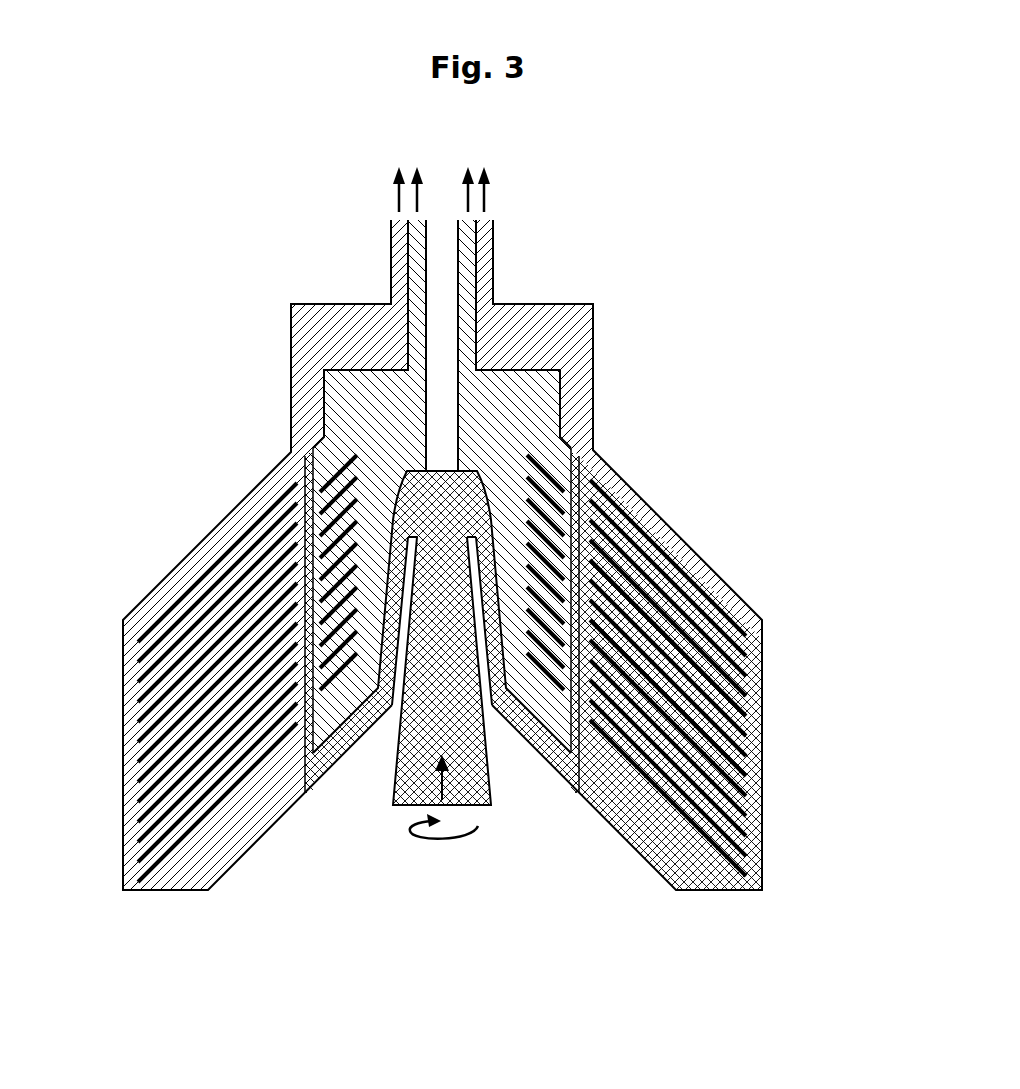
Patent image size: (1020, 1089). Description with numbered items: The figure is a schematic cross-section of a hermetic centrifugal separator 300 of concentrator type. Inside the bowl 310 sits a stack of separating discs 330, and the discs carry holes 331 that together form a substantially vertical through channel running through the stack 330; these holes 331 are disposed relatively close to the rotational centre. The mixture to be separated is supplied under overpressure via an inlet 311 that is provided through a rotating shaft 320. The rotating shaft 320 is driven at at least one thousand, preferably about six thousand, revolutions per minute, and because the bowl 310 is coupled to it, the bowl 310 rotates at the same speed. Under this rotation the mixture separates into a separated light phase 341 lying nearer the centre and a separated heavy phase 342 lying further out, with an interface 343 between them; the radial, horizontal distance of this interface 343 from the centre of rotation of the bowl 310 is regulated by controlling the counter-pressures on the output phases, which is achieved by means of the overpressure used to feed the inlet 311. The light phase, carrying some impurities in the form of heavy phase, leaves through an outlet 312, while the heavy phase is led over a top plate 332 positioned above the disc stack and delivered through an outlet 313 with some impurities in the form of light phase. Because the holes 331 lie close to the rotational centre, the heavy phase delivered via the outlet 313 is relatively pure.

The hermetic centrifugal separator of concentrator type 300 is at (243, 175).
The bowl 310 is at (765, 737).
The inlet 311 is at (442, 671).
The outlet 312 is at (478, 268).
The outlet 313 is at (493, 246).
The rotating shaft 320 is at (460, 740).
The stack of separating discs 330 is at (197, 671).
The holes 331 is at (311, 770).
The top plate 332 is at (184, 601).
The separated light phase 341 is at (553, 712).
The separated heavy phase 342 is at (752, 628).
The interface 343 is at (578, 770).